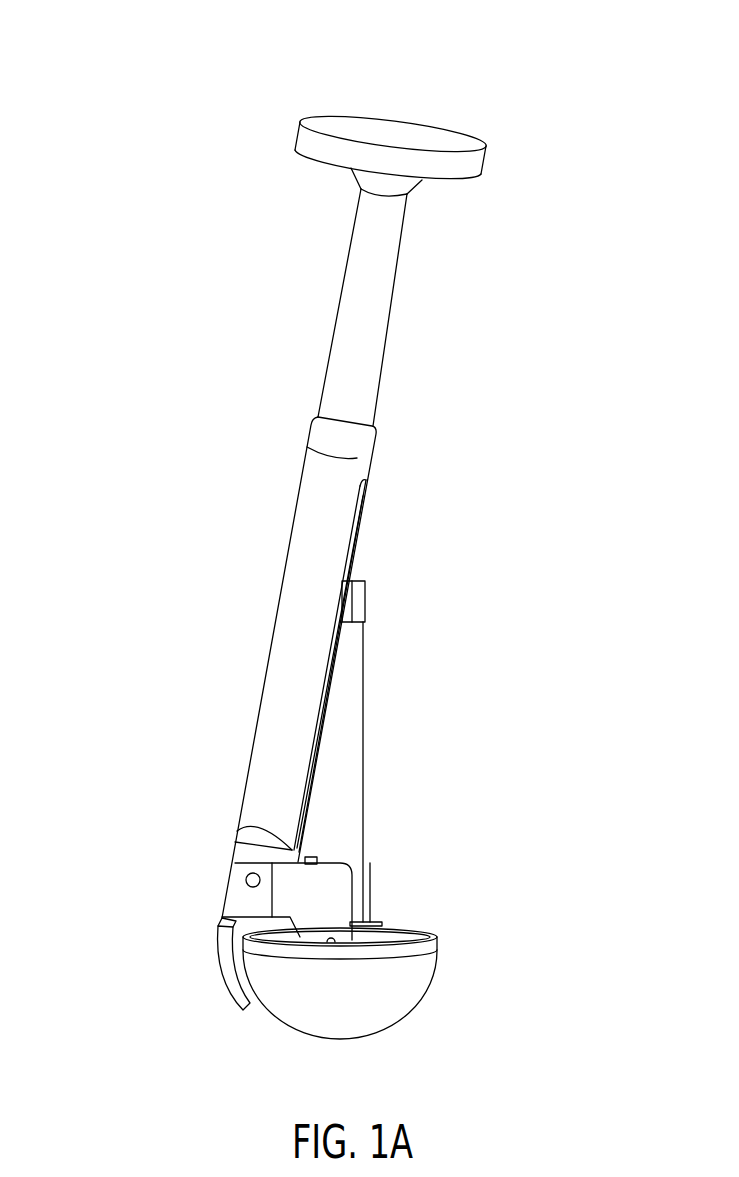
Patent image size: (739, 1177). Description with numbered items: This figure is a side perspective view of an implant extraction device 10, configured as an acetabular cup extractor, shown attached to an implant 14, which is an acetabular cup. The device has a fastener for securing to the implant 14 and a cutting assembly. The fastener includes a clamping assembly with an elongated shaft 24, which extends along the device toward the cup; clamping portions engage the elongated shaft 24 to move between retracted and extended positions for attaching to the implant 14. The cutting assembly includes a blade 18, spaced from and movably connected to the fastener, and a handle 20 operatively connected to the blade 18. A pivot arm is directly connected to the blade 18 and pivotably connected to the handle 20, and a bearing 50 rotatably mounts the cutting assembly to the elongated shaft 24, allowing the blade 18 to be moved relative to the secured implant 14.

The implant extraction device 10 is at (588, 73).
The implant 14 is at (420, 1003).
The blade 18 is at (218, 955).
The handle 20 is at (290, 532).
The elongated shaft 24 is at (363, 742).
The bearing 50 is at (387, 923).